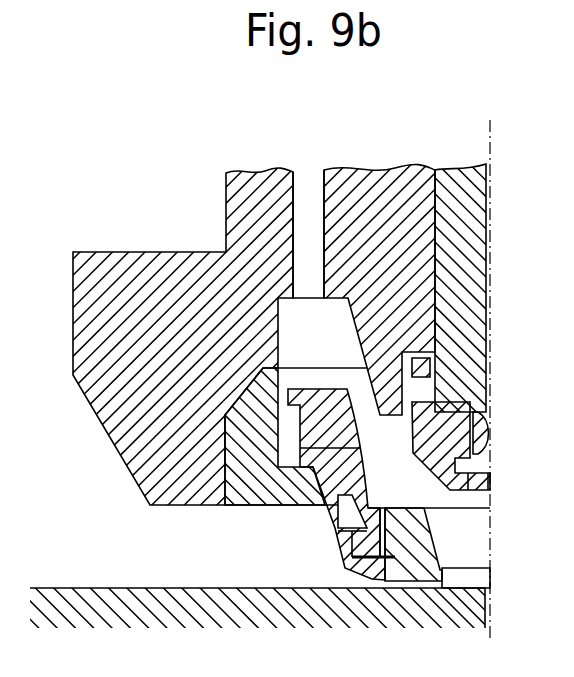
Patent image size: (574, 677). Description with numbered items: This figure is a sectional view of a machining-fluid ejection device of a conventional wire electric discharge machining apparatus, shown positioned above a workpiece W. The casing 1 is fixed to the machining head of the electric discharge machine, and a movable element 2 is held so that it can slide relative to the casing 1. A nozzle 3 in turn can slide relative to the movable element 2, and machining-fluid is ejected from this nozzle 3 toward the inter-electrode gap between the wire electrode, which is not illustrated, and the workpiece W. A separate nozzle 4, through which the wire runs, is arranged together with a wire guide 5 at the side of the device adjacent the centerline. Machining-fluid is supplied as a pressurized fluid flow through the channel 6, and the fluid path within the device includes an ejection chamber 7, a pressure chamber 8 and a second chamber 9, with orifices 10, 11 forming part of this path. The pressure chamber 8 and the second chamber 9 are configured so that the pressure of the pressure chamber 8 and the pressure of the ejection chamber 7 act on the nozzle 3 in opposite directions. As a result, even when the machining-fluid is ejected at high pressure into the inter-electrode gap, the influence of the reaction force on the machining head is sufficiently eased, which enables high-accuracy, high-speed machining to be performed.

The casing 1 is at (105, 430).
The movable element 2 is at (337, 548).
The nozzle 3 is at (402, 547).
The nozzle 4 is at (490, 480).
The wire guide 5 is at (489, 432).
The channel 6 is at (300, 171).
The ejection chamber 7 is at (479, 549).
The pressure chamber 8 is at (375, 558).
The second chamber 9 is at (330, 522).
The orifice 10 is at (381, 518).
The orifice 11 is at (337, 508).
The workpiece W is at (109, 588).